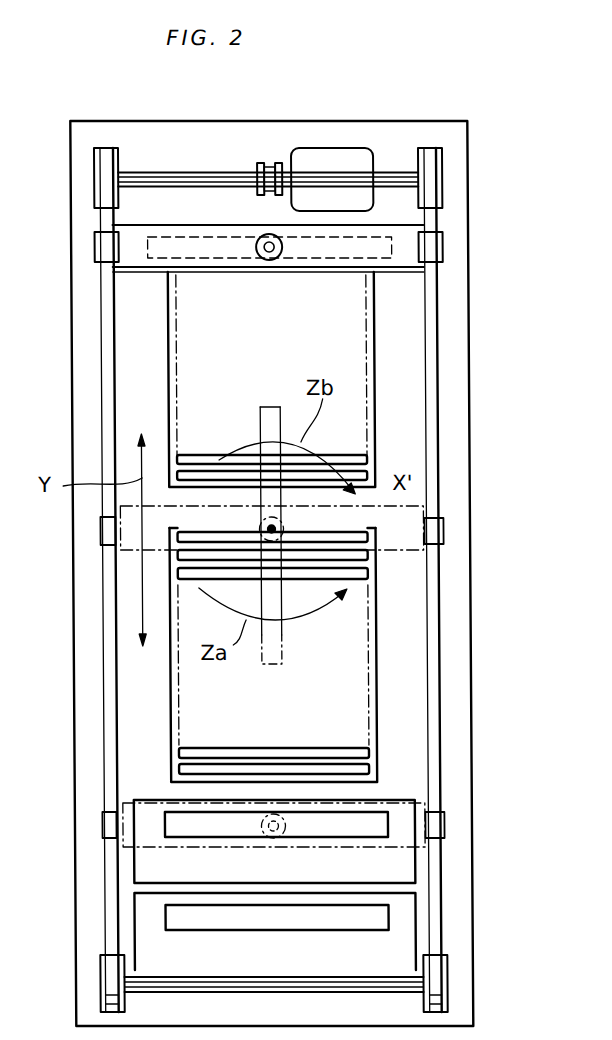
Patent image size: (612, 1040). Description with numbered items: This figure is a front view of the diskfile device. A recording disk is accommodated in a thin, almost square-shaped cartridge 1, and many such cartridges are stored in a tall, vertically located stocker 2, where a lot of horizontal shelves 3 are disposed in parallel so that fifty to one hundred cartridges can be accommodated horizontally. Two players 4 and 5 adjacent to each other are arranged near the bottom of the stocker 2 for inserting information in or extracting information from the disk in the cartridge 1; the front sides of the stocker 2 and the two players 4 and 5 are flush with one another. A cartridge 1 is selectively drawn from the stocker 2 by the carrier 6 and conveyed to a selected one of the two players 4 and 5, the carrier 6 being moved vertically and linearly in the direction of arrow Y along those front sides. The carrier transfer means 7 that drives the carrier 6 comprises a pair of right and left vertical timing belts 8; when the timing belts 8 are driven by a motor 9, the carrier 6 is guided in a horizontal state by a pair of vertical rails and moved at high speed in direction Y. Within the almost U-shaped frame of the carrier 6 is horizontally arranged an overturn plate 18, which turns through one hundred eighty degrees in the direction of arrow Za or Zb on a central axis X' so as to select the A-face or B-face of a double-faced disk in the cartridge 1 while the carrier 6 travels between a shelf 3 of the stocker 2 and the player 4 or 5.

The cartridge 1 is at (356, 480).
The stocker 2 is at (373, 358).
The horizontal shelves 3 is at (186, 544).
The player 4 is at (402, 868).
The player 5 is at (402, 945).
The carrier 6 is at (131, 263).
The carrier transfer means 7 is at (448, 223).
The timing belts 8 is at (434, 292).
The motor 9 is at (356, 153).
The overturn plate 18 is at (207, 252).